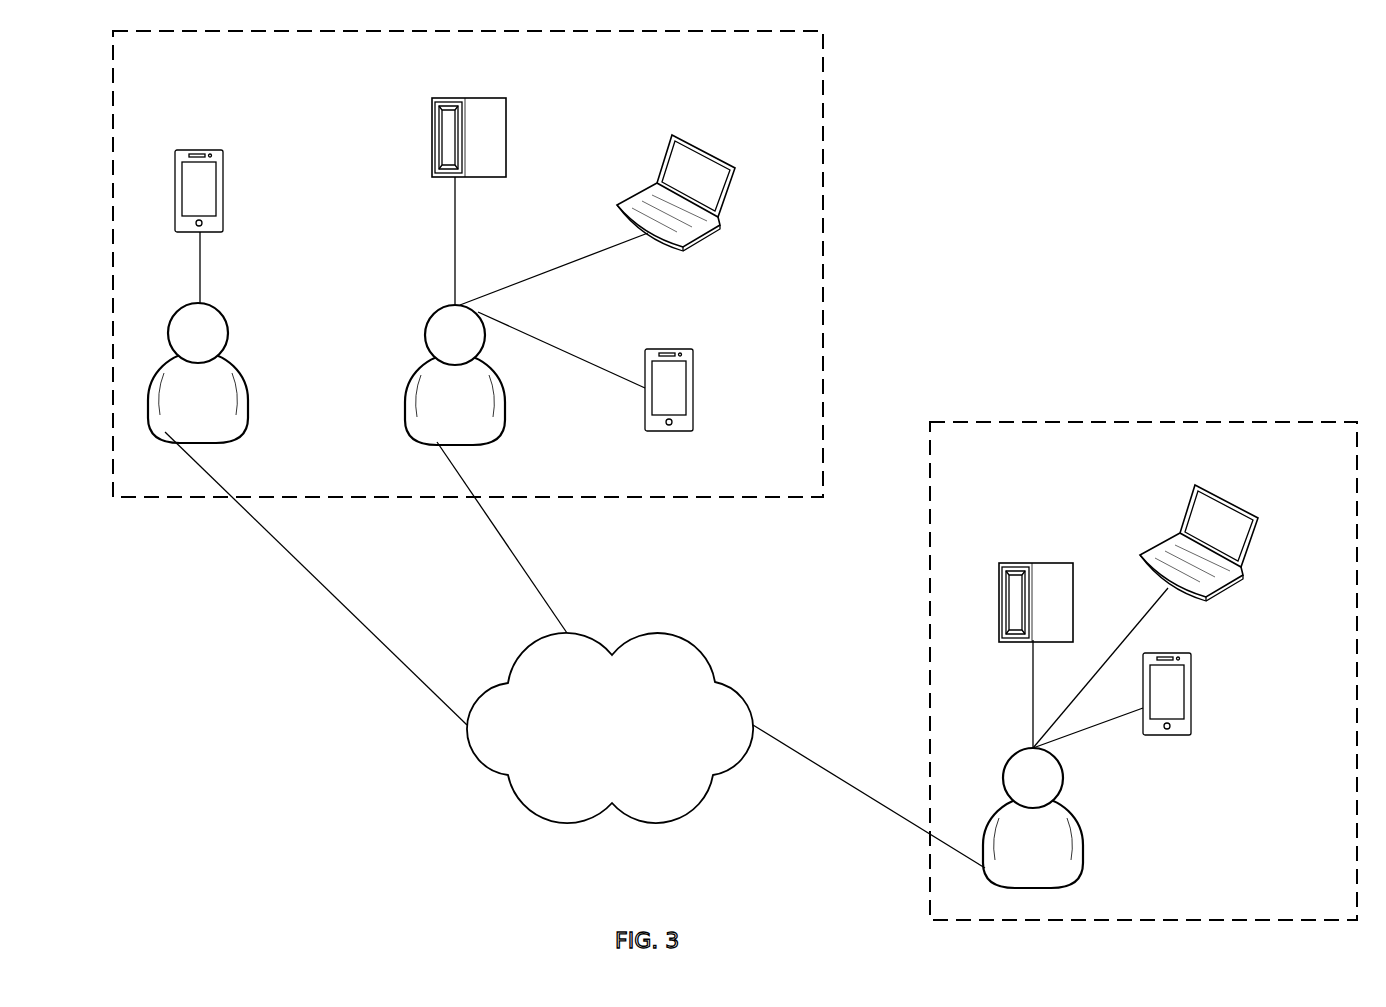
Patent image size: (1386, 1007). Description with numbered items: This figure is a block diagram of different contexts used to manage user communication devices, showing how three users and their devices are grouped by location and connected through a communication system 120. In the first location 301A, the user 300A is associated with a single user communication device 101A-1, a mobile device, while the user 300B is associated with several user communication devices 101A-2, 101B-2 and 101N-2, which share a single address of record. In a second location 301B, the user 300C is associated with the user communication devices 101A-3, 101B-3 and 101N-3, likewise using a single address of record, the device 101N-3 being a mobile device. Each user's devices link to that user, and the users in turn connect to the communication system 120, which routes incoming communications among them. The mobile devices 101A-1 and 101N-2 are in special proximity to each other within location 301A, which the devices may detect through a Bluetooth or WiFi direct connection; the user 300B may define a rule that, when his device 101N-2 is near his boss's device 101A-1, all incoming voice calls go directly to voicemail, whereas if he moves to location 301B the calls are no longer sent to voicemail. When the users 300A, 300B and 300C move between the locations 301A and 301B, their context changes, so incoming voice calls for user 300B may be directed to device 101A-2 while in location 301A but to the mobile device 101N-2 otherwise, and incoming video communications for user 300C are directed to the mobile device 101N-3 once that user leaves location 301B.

The user communication device 101A-1 is at (200, 150).
The user communication device 101A-2 is at (455, 97).
The user communication device 101B-2 is at (674, 133).
The user communication device 101N-2 is at (655, 348).
The user communication device 101A-3 is at (1010, 562).
The user communication device 101B-3 is at (1198, 484).
The user communication device 101N-3 is at (1152, 652).
The user 300A is at (245, 415).
The user 300B is at (503, 415).
The user 300C is at (1083, 860).
The location 301A is at (823, 172).
The location 301B is at (1140, 422).
The communication system 120 is at (684, 646).